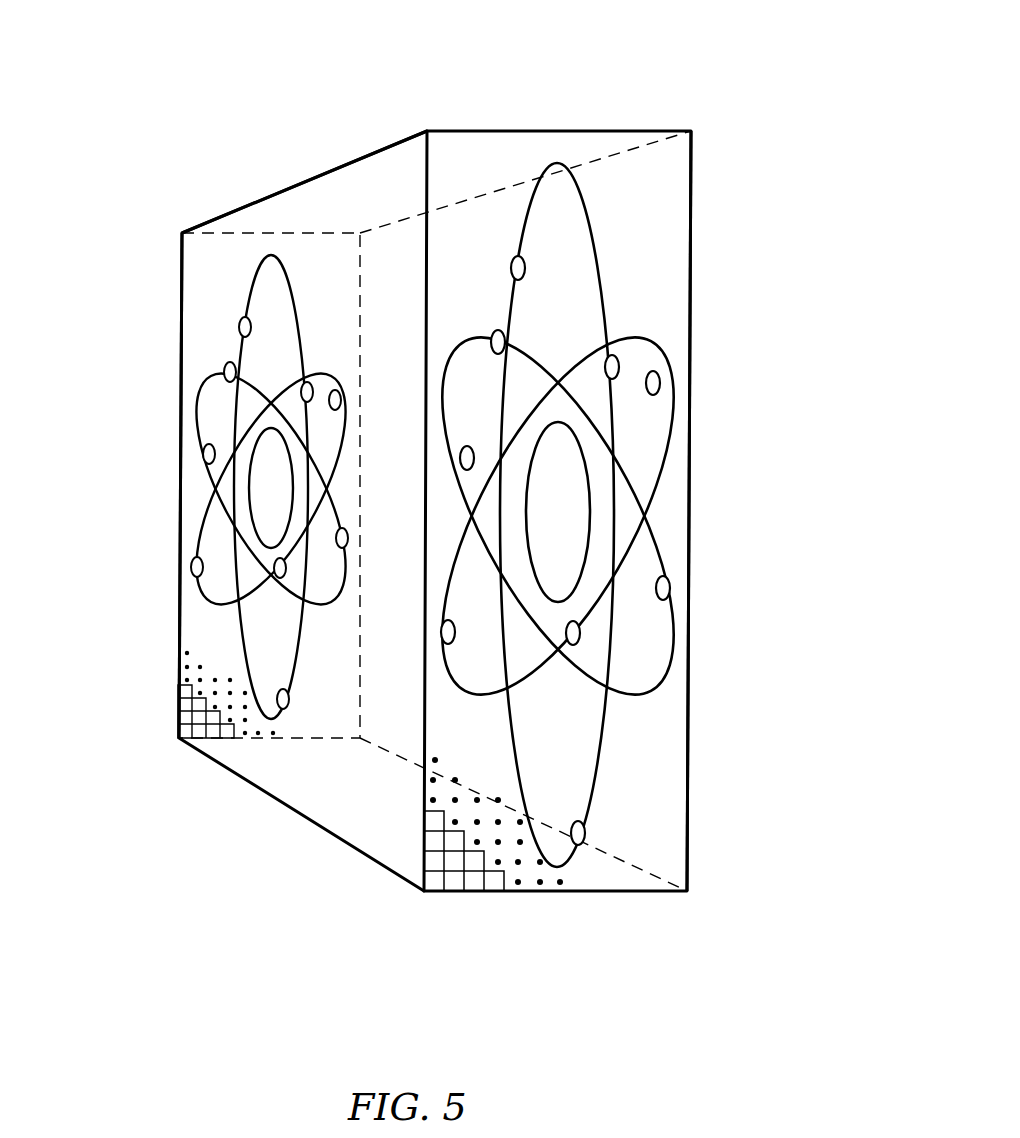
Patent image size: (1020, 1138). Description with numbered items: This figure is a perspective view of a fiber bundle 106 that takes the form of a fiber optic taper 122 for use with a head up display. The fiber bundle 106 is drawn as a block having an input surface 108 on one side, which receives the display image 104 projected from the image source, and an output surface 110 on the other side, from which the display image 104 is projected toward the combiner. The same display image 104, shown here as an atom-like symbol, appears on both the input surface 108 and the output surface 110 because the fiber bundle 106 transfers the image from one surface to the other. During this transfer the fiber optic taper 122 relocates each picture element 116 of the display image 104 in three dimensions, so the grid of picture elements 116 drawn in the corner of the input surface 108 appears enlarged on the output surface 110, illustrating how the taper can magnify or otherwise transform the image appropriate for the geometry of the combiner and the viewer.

The display image 104 is at (227, 363).
The fiber bundle 106 is at (547, 84).
The input surface 108 is at (178, 387).
The output surface 110 is at (672, 515).
The picture element 116 is at (218, 734).
The fiber optic taper 122 is at (402, 139).